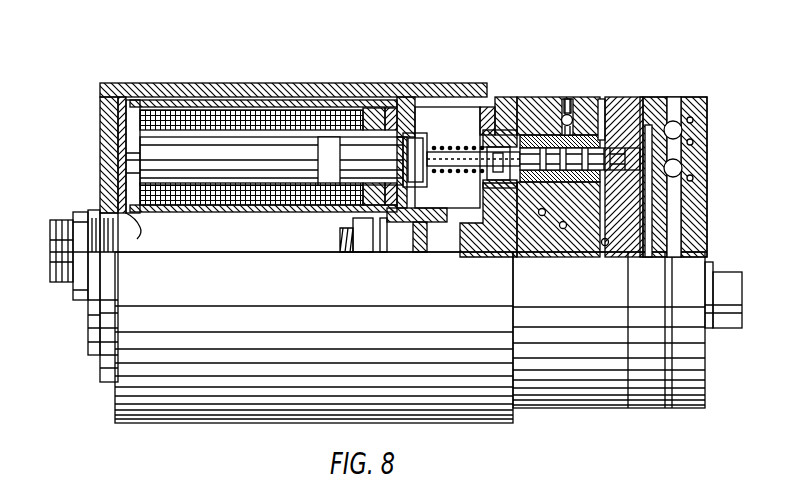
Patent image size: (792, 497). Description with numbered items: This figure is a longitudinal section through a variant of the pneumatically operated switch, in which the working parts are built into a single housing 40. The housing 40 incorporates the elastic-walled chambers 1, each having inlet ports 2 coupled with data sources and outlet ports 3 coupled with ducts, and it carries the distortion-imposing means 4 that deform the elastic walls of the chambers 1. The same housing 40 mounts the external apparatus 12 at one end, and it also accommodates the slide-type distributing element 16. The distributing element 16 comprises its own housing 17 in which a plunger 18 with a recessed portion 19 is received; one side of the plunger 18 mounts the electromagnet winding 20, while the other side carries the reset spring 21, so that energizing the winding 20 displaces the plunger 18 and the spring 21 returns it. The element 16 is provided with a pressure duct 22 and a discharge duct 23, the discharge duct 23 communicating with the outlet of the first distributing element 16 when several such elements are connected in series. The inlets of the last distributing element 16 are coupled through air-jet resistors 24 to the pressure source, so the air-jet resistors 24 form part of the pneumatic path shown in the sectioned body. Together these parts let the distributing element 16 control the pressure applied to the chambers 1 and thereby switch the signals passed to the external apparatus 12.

The chambers 1 is at (673, 117).
The inlet ports 2 is at (683, 120).
The outlet ports 3 is at (692, 140).
The distortion-imposing means 4 is at (648, 125).
The external apparatus 12 is at (731, 285).
The slide-type distributing element 16 is at (288, 218).
The housing 17 is at (552, 112).
The plunger 18 is at (519, 102).
The recessed portion 19 is at (581, 100).
The electromagnet winding 20 is at (320, 126).
The reset spring 21 is at (437, 137).
The pressure duct 22 is at (568, 108).
The discharge duct 23 is at (617, 98).
The air-jet resistors 24 is at (601, 200).
The housing 40 is at (697, 97).